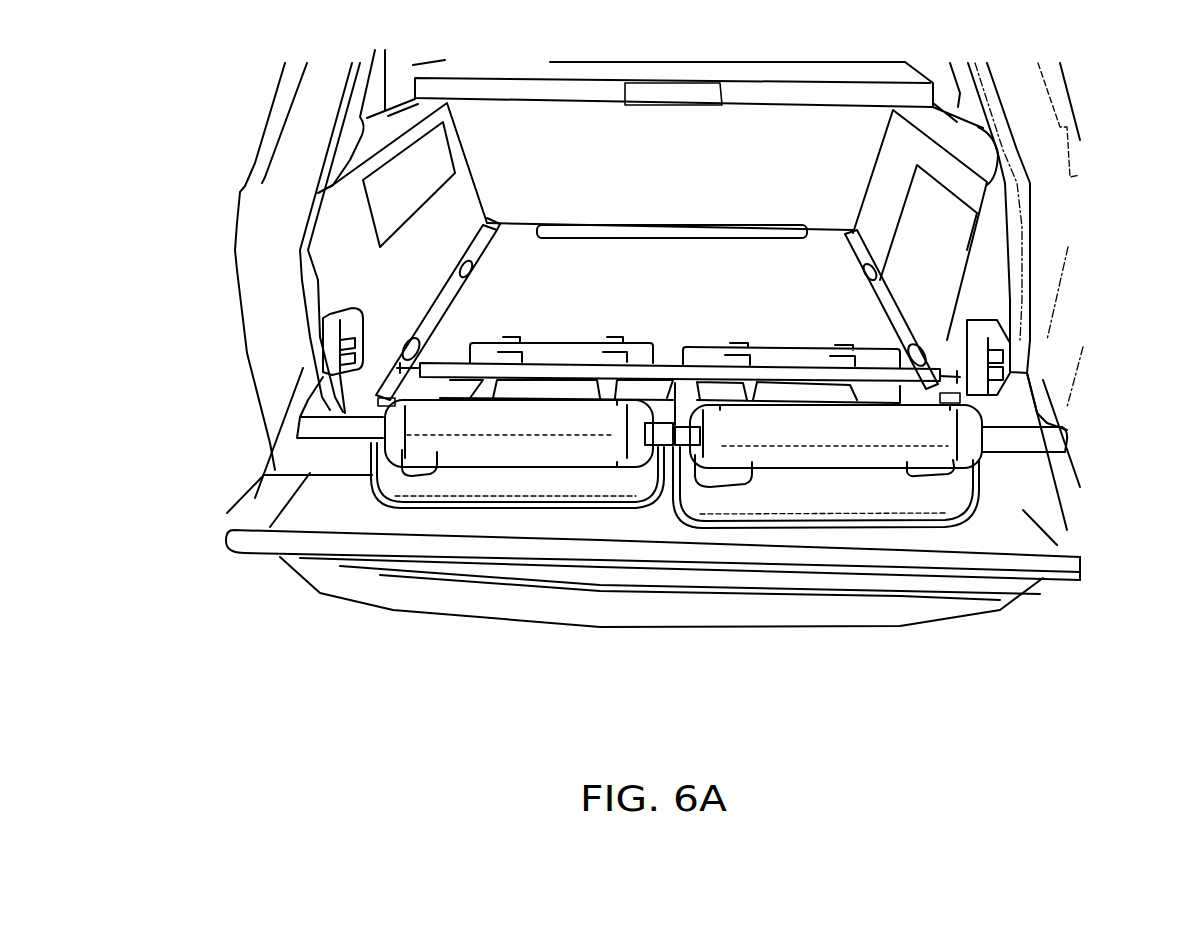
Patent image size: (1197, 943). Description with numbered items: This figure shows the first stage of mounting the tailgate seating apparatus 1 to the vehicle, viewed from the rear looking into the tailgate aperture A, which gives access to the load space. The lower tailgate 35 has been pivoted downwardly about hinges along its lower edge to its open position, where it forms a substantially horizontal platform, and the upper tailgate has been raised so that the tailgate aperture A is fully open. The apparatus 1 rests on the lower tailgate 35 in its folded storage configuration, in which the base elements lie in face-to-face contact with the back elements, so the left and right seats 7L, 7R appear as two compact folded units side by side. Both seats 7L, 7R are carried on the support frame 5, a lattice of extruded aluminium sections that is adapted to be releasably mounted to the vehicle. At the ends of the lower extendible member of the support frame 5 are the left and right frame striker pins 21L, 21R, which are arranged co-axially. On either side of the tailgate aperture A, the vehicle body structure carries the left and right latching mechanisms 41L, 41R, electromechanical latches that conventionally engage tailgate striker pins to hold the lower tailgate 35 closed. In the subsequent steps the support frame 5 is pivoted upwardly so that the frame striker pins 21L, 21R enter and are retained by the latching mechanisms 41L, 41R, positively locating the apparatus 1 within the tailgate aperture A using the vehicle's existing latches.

The tailgate aperture A is at (433, 221).
The tailgate seating apparatus 1 is at (955, 489).
The support frame 5 is at (348, 433).
The left seat 7L is at (535, 494).
The right seat 7R is at (821, 490).
The left frame striker pin 21L is at (375, 369).
The right frame striker pin 21R is at (982, 392).
The lower tailgate 35 is at (331, 578).
The left latching mechanism 41L is at (318, 340).
The right latching mechanism 41R is at (1019, 347).